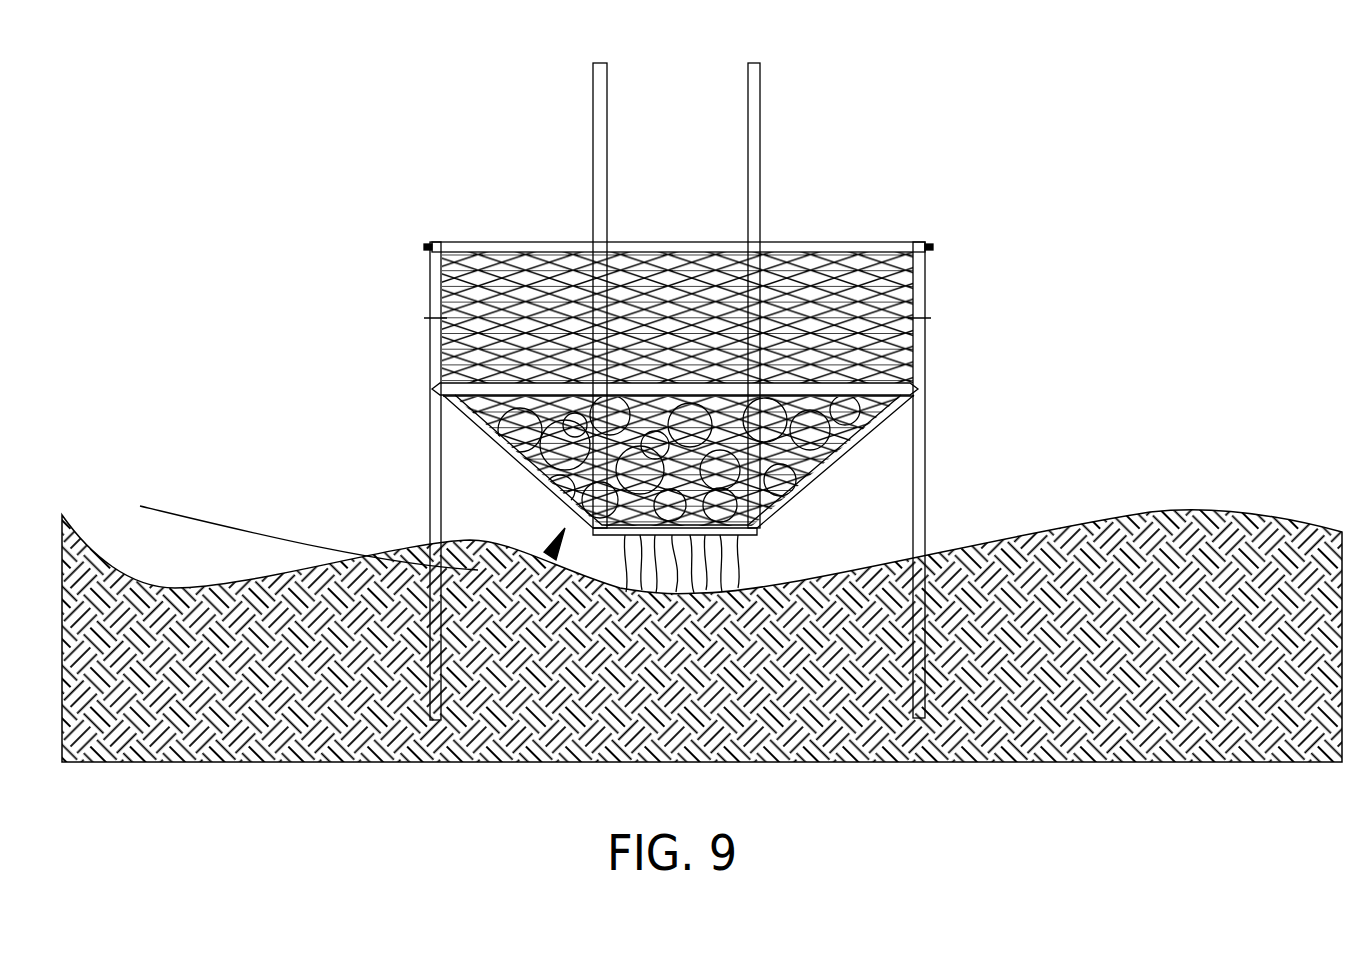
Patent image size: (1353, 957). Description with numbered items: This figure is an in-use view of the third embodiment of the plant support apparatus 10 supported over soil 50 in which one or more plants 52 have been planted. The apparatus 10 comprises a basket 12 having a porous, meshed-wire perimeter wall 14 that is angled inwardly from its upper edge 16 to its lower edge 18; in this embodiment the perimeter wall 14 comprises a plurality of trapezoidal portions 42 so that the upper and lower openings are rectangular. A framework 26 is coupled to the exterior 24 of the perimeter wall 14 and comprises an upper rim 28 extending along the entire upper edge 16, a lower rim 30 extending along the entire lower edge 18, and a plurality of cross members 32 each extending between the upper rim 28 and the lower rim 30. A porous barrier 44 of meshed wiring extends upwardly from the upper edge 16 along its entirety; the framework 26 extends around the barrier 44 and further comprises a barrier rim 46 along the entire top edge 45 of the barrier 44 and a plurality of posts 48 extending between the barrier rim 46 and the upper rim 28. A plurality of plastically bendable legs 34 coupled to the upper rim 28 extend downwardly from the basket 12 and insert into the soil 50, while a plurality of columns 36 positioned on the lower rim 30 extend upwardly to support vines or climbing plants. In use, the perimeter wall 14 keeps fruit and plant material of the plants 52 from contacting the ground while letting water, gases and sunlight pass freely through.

The plant support apparatus 10 is at (1012, 130).
The basket 12 is at (845, 488).
The perimeter wall 14 is at (503, 478).
The upper edge 16 is at (497, 436).
The lower edge 18 is at (575, 522).
The exterior 24 is at (905, 412).
The framework 26 is at (338, 531).
The upper rim 28 is at (843, 388).
The lower rim 30 is at (825, 468).
The cross member 32 is at (505, 460).
The leg 34 is at (430, 516).
The column 36 is at (607, 119).
The trapezoidal portion 42 is at (573, 412).
The barrier 44 is at (945, 278).
The top edge 45 is at (836, 248).
The barrier rim 46 is at (665, 247).
The post 48 is at (430, 289).
The soil 50 is at (1270, 515).
The plant 52 is at (740, 563).